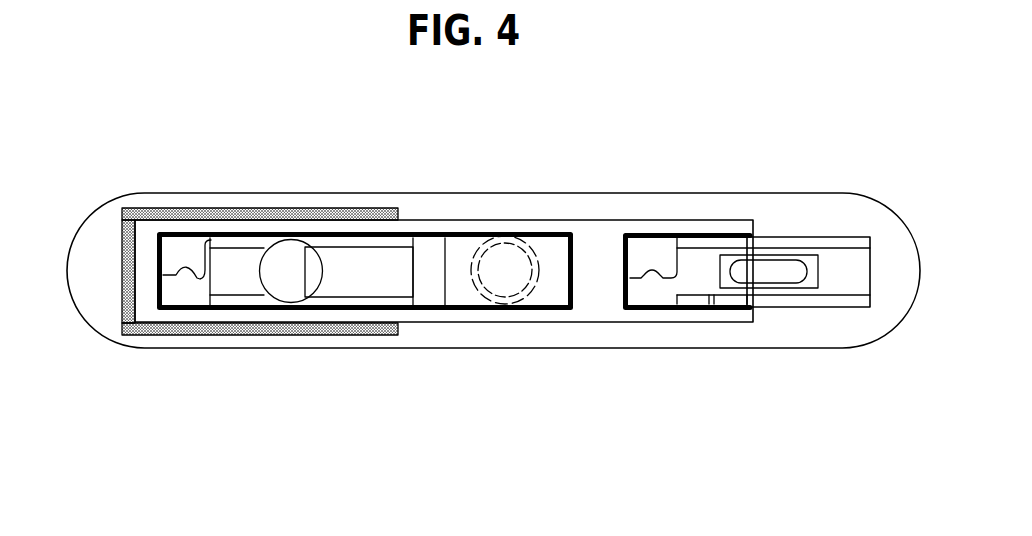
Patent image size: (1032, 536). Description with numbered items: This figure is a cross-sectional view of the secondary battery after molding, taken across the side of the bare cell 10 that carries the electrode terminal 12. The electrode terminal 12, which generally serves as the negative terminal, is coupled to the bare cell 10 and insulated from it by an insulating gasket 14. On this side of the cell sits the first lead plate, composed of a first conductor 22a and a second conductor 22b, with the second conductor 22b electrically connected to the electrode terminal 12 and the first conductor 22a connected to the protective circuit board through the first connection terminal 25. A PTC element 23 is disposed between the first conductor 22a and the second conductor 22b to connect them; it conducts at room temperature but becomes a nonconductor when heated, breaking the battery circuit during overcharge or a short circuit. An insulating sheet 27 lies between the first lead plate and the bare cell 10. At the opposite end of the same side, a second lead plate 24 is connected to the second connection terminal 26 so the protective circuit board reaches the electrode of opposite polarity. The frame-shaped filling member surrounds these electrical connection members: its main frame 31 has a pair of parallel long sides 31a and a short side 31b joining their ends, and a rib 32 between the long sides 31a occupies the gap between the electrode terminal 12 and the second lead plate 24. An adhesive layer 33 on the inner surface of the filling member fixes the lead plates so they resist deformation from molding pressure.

The bare cell 10 is at (810, 207).
The electrode terminal 12 is at (497, 280).
The insulating gasket 14 is at (500, 240).
The first conductor 22a is at (171, 290).
The second conductor 22b is at (557, 290).
The PTC element 23 is at (353, 255).
The second lead plate 24 is at (838, 283).
The first connection terminal 25 is at (185, 247).
The second connection terminal 26 is at (640, 247).
The insulating sheet 27 is at (240, 215).
The main frame 31 is at (207, 426).
The long sides 31a is at (207, 318).
The short side 31b is at (152, 296).
The rib 32 is at (603, 255).
The adhesive layer 33 is at (327, 308).